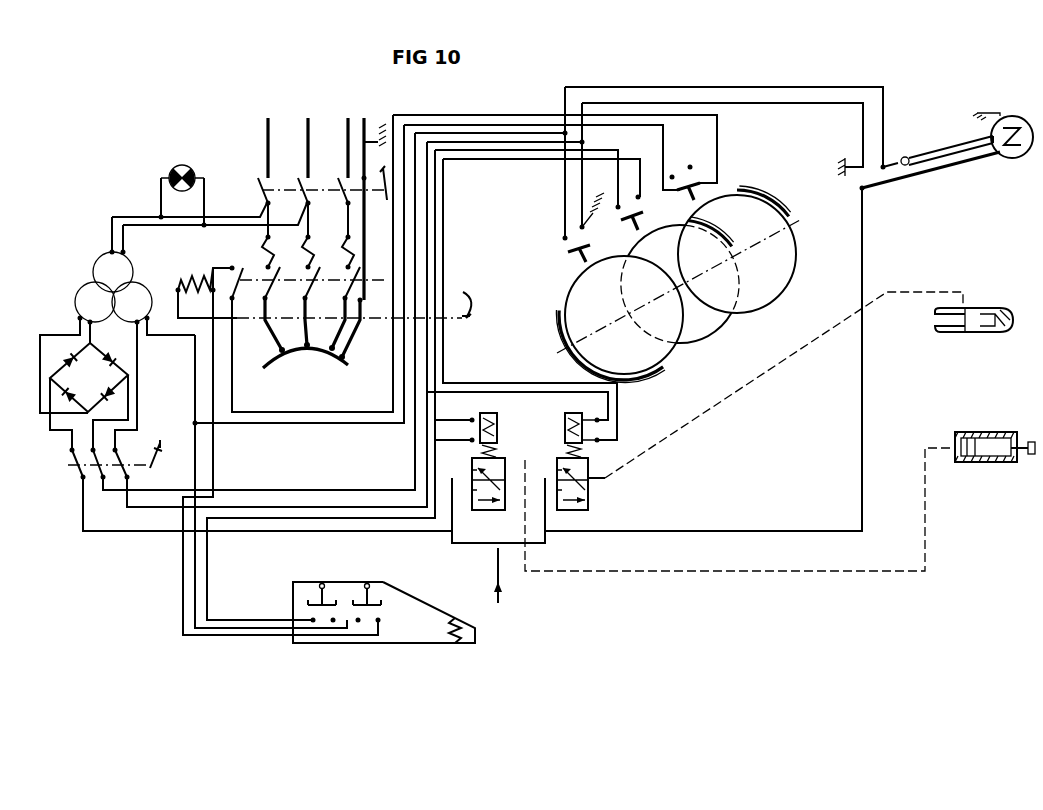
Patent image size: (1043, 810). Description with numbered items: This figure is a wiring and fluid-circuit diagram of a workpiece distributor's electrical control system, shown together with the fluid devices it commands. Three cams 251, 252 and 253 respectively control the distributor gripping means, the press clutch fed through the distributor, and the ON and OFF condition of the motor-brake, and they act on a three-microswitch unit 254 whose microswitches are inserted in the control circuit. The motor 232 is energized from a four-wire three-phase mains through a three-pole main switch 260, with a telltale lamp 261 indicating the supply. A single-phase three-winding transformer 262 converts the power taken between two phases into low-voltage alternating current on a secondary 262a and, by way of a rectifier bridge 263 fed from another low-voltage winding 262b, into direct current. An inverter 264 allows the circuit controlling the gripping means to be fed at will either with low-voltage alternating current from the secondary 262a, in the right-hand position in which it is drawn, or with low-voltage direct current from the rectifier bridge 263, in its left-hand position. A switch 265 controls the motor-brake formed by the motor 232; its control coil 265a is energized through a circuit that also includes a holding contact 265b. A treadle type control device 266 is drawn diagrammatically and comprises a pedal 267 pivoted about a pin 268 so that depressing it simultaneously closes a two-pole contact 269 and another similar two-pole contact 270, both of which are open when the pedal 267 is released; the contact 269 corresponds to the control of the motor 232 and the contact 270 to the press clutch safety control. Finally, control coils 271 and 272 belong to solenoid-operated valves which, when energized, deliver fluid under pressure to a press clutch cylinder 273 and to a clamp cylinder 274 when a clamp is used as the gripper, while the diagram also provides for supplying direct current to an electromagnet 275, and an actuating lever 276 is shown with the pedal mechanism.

The motor 232 is at (311, 338).
The cam 251 is at (568, 335).
The cam 252 is at (765, 282).
The cam 253 is at (753, 192).
The three-microswitch unit 254 is at (673, 282).
The three-pole main switch 260 is at (257, 187).
The telltale lamp 261 is at (180, 170).
The single-phase three-winding transformer 262 is at (87, 268).
The secondary 262a is at (135, 283).
The low-voltage winding 262b is at (73, 300).
The rectifier bridge 263 is at (62, 382).
The inverter 264 is at (69, 463).
The switch 265 is at (257, 267).
The control coil 265a is at (200, 272).
The holding contact 265b is at (240, 285).
The treadle type control device 266 is at (343, 618).
The pedal 267 is at (428, 602).
The pin 268 is at (292, 597).
The two-pole contact 269 is at (396, 580).
The two-pole contact 270 is at (325, 602).
The control coil 271 is at (495, 432).
The control coil 272 is at (565, 428).
The press clutch cylinder 273 is at (978, 432).
The clamp cylinder 274 is at (975, 305).
The electromagnet 275 is at (1003, 128).
The actuating lever 276 is at (480, 285).